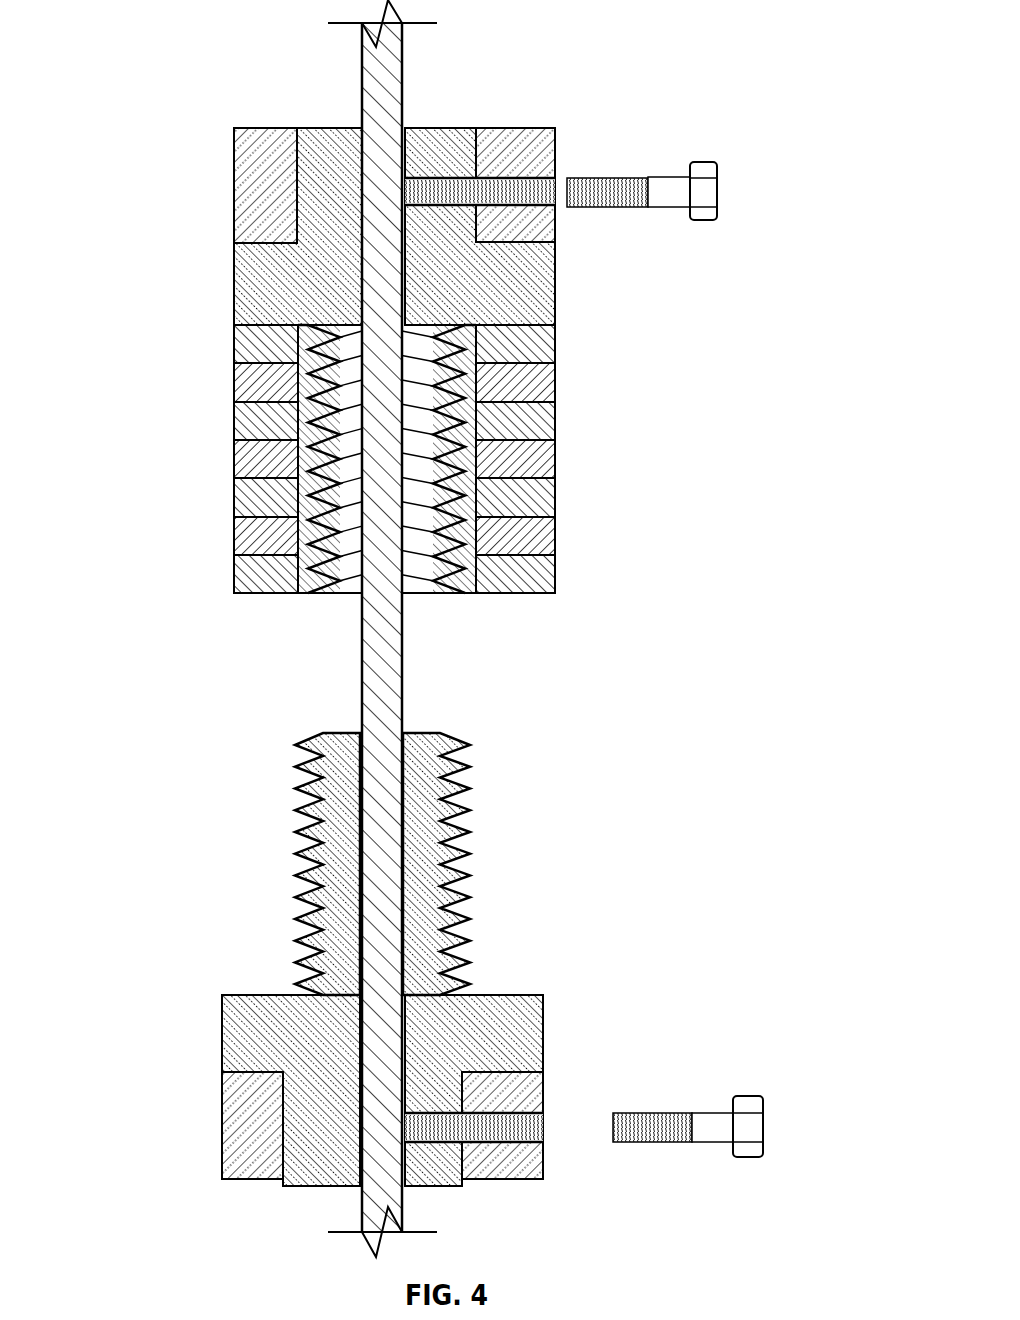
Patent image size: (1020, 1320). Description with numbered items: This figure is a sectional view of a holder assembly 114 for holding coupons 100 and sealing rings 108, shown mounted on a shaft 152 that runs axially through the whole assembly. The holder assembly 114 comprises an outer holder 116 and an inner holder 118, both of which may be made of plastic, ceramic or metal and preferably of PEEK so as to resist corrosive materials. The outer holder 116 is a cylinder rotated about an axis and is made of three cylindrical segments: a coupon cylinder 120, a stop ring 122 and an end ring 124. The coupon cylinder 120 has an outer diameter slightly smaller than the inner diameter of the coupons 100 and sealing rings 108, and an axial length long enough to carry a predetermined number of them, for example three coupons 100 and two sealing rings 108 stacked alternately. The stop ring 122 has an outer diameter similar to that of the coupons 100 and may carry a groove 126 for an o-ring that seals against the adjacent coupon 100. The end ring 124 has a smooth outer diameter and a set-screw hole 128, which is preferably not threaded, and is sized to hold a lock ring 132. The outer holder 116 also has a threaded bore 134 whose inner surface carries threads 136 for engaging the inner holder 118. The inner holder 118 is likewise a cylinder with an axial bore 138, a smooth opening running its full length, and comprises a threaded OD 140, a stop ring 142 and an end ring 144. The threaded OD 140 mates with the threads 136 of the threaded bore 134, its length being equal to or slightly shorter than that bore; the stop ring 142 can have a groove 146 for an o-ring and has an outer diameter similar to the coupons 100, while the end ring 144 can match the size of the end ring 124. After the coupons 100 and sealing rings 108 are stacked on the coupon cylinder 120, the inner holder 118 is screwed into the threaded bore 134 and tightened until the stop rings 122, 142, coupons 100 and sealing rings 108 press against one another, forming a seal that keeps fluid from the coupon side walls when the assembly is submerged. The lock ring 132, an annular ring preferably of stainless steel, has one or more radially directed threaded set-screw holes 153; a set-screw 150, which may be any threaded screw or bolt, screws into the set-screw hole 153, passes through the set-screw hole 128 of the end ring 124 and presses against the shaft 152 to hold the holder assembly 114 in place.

The coupon 100 is at (235, 455).
The sealing ring 108 is at (396, 459).
The holder assembly 114 is at (228, 193).
The outer holder 116 is at (454, 342).
The inner holder 118 is at (476, 993).
The coupon cylinder 120 is at (300, 562).
The stop ring 122 is at (256, 193).
The end ring 124 is at (315, 145).
The groove 126 is at (262, 328).
The set-screw hole 128 is at (450, 185).
The lock ring 132 is at (525, 205).
The threaded bore 134 is at (355, 128).
The threads 136 is at (415, 595).
The axial bore 138 is at (407, 1173).
The threaded OD 140 is at (467, 763).
The stop ring 142 is at (520, 1093).
The end ring 144 is at (283, 1157).
The groove 146 is at (507, 995).
The set-screw 150 is at (717, 190).
The shaft 152 is at (395, 77).
The set-screw hole 153 is at (555, 248).